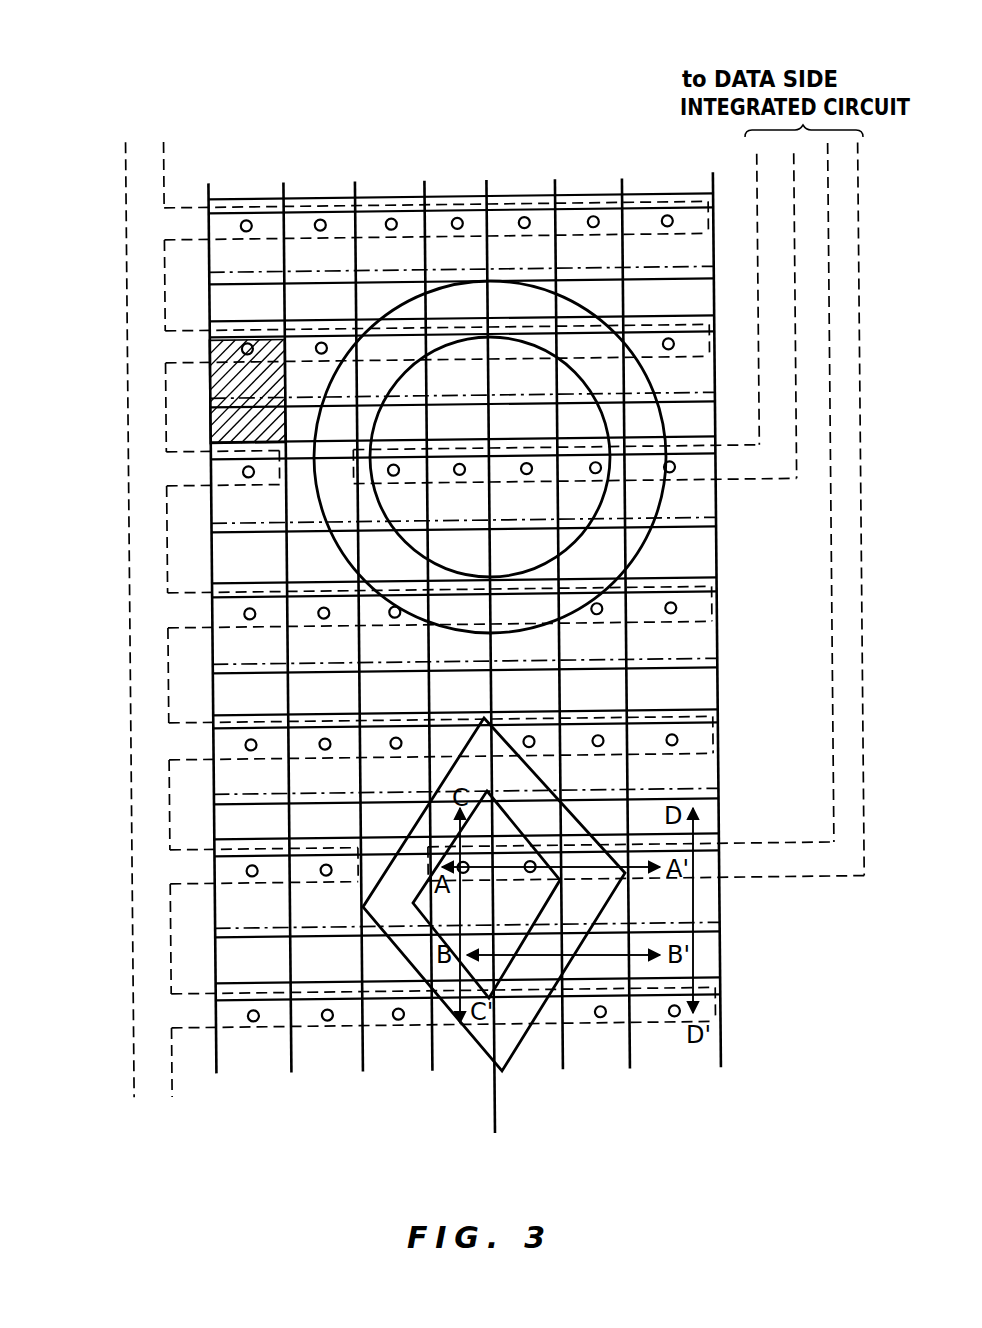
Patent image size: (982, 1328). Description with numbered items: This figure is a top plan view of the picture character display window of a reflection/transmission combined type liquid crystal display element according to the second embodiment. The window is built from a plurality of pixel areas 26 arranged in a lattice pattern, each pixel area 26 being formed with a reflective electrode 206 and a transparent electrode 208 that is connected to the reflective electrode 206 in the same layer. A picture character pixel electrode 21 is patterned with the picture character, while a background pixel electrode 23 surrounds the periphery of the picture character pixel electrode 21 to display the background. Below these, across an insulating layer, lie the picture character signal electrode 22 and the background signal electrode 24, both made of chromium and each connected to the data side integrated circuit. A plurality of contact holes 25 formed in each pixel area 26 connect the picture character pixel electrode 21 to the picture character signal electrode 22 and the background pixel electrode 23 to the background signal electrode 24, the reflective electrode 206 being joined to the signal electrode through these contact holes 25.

The picture character pixel electrode 21 is at (497, 330).
The picture character signal electrode 22 is at (753, 177).
The background pixel electrode 23 is at (257, 196).
The background signal electrode 24 is at (127, 267).
The contact holes 25 is at (391, 215).
The pixel area 26 is at (208, 420).
The reflective electrode 206 is at (585, 497).
The transparent electrode 208 is at (537, 545).